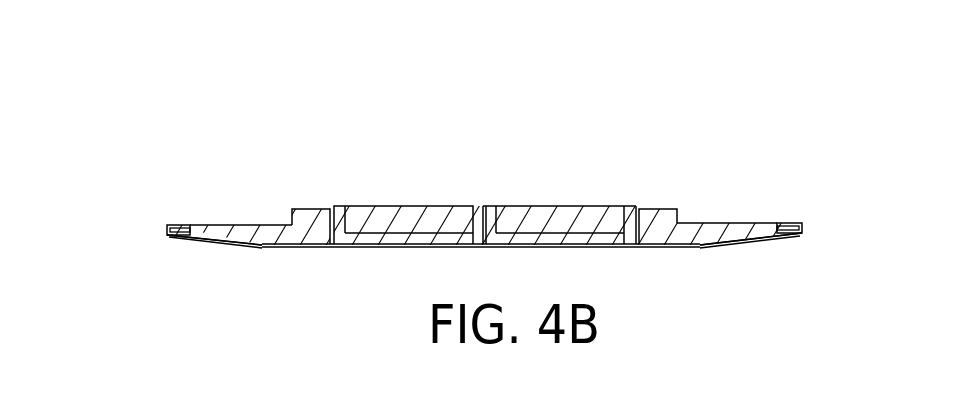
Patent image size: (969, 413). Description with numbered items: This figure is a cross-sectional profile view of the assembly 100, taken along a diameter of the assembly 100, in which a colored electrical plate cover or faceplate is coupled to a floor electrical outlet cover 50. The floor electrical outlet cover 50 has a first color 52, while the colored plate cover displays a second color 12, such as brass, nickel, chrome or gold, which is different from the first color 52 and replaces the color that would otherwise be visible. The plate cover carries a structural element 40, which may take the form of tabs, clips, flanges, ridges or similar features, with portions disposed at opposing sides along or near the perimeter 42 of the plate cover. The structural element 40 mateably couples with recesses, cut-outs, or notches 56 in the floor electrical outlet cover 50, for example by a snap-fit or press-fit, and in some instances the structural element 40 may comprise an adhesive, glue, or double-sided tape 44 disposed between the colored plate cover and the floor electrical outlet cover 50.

The assembly 100 is at (124, 135).
The second color 12 is at (253, 248).
The structural element 40 is at (183, 225).
The perimeter 42 is at (224, 213).
The adhesive, glue, or double-sided tape 44 is at (317, 228).
The floor electrical outlet cover 50 is at (662, 215).
The first color 52 is at (257, 230).
The notches 56 is at (768, 220).